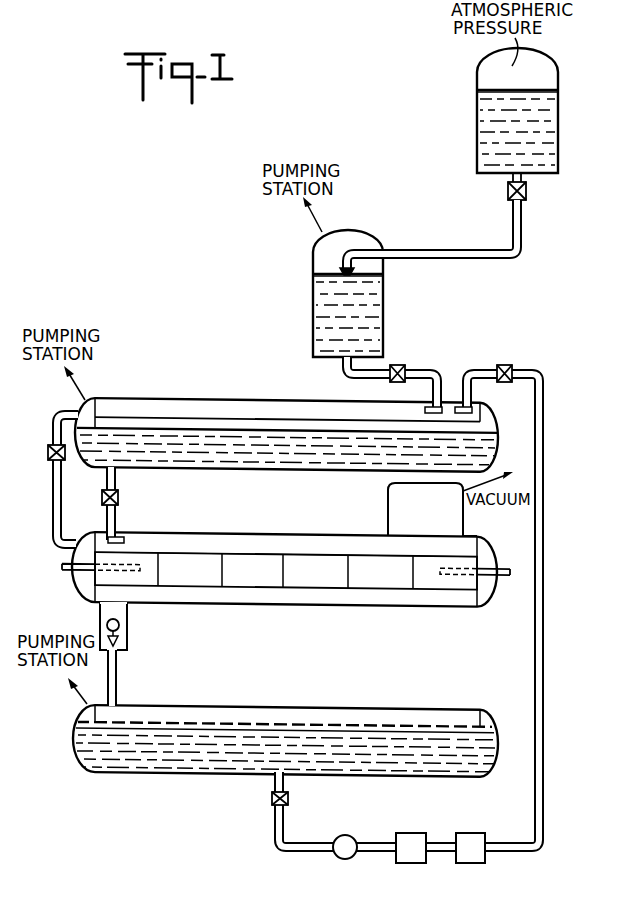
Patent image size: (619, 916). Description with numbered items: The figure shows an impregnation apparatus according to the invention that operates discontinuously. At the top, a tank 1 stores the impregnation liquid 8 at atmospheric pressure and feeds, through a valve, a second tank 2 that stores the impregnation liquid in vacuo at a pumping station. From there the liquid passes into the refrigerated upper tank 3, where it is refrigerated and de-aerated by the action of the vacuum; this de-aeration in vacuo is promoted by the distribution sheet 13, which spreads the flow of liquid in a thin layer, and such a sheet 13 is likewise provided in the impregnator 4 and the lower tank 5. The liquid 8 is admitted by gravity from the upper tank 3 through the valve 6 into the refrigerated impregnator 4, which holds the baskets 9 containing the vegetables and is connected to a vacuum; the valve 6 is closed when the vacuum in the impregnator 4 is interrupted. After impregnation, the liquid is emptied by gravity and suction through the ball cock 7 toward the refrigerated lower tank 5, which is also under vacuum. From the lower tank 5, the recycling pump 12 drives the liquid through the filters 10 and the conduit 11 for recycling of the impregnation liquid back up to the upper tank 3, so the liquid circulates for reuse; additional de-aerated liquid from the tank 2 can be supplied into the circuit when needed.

The tank for storage of the impregnation liquid 1 is at (567, 122).
The tank for storage of the impregnation liquid in vacuo 2 is at (305, 296).
The refrigerated upper tank 3 is at (286, 416).
The impregnator 4 is at (286, 574).
The refrigerated lower tank 5 is at (263, 700).
The valve 6 is at (120, 497).
The ball cock 7 is at (127, 633).
The impregnation liquid 8 is at (287, 450).
The baskets containing the vegetables 9 is at (256, 563).
The filters 10 is at (407, 865).
The conduit for recycling of the impregnation liquid 11 is at (545, 660).
The recycling pump 12 is at (347, 859).
The distribution sheet 13 is at (128, 414).